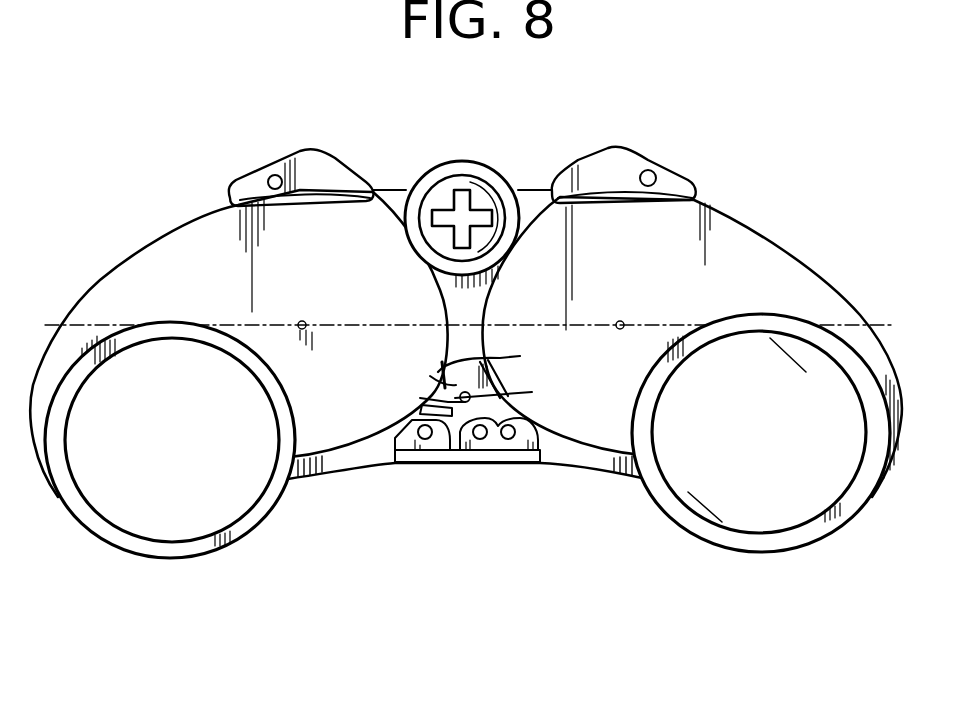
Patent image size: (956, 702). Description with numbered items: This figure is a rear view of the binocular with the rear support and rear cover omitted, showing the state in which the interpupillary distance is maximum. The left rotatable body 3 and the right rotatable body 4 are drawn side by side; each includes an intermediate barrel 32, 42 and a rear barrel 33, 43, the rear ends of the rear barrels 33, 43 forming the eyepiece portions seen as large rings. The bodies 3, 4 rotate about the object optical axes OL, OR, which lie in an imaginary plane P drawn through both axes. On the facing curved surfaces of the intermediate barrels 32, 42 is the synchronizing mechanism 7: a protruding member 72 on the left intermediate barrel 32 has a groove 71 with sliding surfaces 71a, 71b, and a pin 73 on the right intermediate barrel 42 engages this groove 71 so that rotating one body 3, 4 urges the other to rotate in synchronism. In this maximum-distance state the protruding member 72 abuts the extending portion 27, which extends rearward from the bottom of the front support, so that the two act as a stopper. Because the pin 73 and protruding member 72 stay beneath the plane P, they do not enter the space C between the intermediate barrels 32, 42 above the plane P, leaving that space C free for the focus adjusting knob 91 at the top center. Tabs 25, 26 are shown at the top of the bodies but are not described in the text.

The left rotatable body 3 is at (96, 278).
The right rotatable body 4 is at (822, 260).
The intermediate barrel 32 is at (178, 250).
The intermediate barrel 42 is at (728, 238).
The rear barrel 33 is at (174, 551).
The rear barrel 43 is at (770, 548).
The left strap attachment tab 25 is at (353, 133).
The right strap attachment tab 26 is at (620, 162).
The focus adjusting knob 91 is at (460, 168).
The extending portion 27 is at (465, 462).
The synchronizing mechanism 7 is at (458, 332).
The groove 71 is at (518, 352).
The sliding surface 71a is at (430, 376).
The sliding surface 71b is at (422, 405).
The protruding member 72 is at (441, 366).
The pin 73 is at (505, 393).
The space C is at (537, 198).
The object optical axis OL is at (302, 321).
The object optical axis OR is at (620, 321).
The imaginary plane P is at (665, 319).